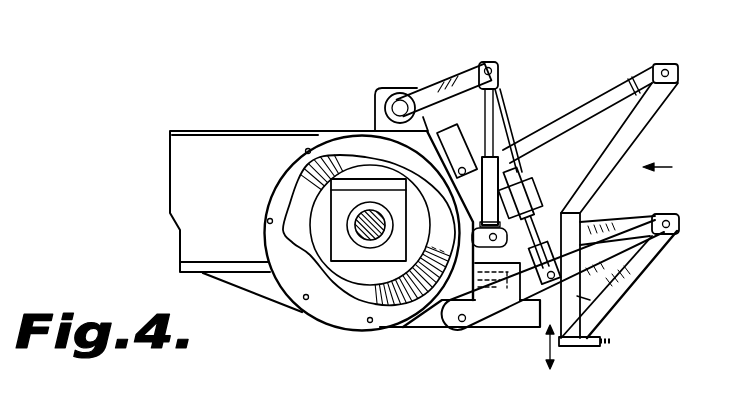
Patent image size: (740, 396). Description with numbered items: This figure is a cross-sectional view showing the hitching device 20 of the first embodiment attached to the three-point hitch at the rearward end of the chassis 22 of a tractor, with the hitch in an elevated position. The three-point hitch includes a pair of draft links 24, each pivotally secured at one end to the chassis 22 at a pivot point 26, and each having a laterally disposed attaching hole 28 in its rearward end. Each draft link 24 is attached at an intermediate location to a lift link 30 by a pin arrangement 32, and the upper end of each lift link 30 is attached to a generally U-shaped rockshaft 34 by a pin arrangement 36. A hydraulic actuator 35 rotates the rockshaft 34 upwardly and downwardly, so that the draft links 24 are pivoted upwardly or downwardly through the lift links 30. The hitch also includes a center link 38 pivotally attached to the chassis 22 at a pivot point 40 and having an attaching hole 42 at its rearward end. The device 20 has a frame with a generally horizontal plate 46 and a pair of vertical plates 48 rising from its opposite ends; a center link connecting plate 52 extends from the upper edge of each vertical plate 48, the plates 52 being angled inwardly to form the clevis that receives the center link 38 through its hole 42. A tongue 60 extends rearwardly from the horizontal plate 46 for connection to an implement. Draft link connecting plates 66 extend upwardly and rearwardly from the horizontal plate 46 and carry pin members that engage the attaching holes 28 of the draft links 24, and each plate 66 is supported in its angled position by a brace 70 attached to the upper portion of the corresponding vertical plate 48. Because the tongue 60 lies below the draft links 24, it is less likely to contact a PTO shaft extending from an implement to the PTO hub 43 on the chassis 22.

The hitching device 20 is at (673, 167).
The chassis 22 is at (232, 138).
The draft links 24 is at (488, 328).
The pivot point 26 is at (438, 332).
The attaching hole 28 is at (676, 219).
The lift link 30 is at (505, 91).
The pin arrangement 32 is at (553, 203).
The rockshaft 34 is at (425, 93).
The hydraulic actuator 35 is at (508, 118).
The pin arrangement 36 is at (489, 63).
The center link 38 is at (585, 100).
The pivot point 40 is at (463, 167).
The attaching hole 42 is at (665, 64).
The PTO hub 43 is at (490, 300).
The horizontal plate 46 is at (577, 347).
The vertical plates 48 is at (590, 298).
The center link connecting plate 52 is at (640, 132).
The tongue 60 is at (615, 342).
The draft link connecting plates 66 is at (652, 262).
The brace 70 is at (632, 218).